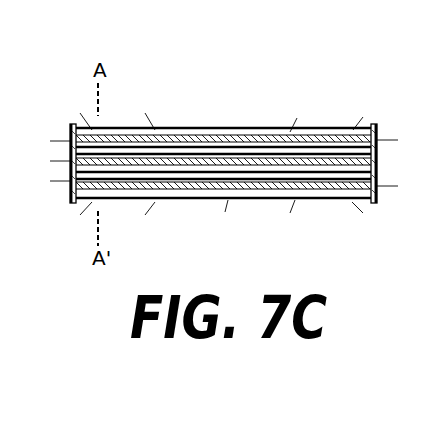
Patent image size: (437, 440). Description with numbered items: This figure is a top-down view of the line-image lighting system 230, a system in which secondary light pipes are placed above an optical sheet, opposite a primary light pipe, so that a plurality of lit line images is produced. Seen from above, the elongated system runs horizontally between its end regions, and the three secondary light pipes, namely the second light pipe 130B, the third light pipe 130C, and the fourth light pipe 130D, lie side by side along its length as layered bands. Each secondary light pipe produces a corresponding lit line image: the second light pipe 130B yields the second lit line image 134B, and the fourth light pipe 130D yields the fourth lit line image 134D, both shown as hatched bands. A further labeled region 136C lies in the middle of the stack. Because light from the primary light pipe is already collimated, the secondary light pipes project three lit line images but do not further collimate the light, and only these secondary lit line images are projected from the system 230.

The line-image lighting system 230 is at (187, 100).
The second light pipe 130B is at (333, 125).
The second lit line image 134B is at (283, 128).
The middle layer 136C is at (330, 165).
The fourth lit line image 134D is at (192, 191).
The fourth light pipe 130D is at (228, 200).
The third light pipe 130C is at (378, 164).